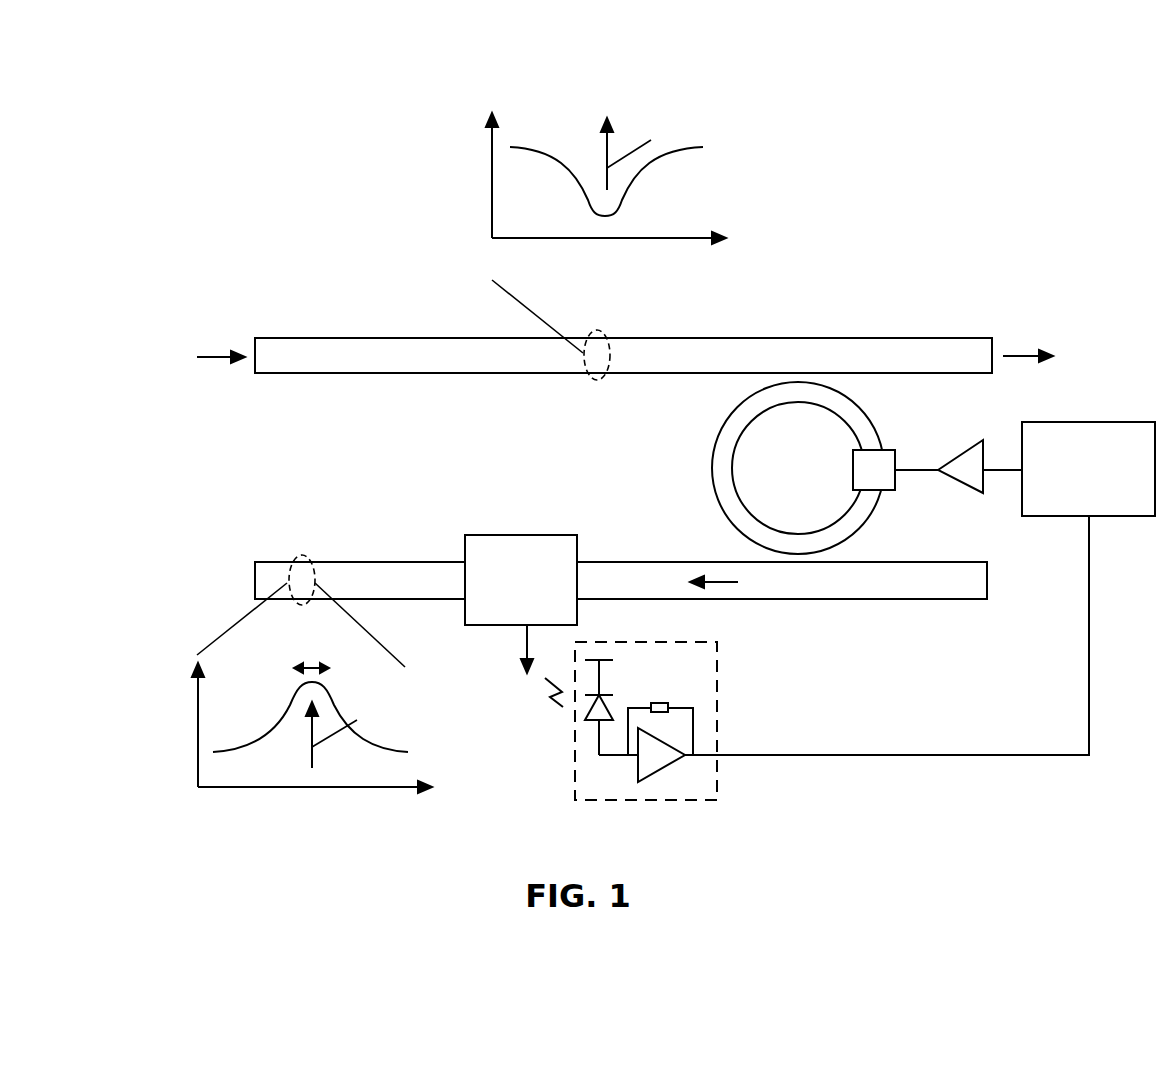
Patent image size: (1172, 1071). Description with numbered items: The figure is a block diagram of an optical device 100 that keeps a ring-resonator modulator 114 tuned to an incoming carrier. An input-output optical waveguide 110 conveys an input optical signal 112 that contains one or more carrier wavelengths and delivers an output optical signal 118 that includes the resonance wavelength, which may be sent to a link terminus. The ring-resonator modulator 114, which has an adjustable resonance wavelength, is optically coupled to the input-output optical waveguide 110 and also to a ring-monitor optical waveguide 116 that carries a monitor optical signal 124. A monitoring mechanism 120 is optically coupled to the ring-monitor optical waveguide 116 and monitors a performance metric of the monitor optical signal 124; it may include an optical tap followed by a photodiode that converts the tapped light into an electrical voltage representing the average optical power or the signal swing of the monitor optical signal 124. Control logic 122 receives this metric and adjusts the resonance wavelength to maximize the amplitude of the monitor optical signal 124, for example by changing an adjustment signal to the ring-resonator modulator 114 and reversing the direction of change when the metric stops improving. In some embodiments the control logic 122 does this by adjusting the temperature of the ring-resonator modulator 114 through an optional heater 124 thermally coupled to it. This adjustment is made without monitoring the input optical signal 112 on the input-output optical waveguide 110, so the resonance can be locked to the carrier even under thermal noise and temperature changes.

The optical device 100 is at (1017, 136).
The input-output optical waveguide 110 is at (407, 357).
The input optical signal 112 is at (222, 352).
The ring-resonator modulator 114 is at (722, 463).
The ring-monitor optical waveguide 116 is at (420, 578).
The output optical signal 118 is at (1026, 356).
The monitoring mechanism 120 is at (717, 785).
The control logic 122 is at (920, 588).
The monitor optical signal 124 is at (878, 473).